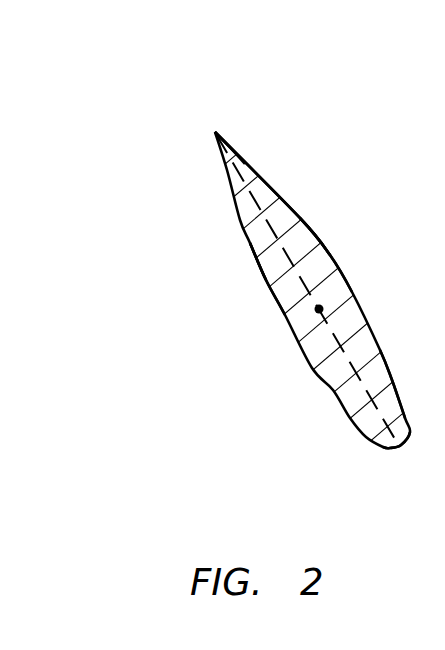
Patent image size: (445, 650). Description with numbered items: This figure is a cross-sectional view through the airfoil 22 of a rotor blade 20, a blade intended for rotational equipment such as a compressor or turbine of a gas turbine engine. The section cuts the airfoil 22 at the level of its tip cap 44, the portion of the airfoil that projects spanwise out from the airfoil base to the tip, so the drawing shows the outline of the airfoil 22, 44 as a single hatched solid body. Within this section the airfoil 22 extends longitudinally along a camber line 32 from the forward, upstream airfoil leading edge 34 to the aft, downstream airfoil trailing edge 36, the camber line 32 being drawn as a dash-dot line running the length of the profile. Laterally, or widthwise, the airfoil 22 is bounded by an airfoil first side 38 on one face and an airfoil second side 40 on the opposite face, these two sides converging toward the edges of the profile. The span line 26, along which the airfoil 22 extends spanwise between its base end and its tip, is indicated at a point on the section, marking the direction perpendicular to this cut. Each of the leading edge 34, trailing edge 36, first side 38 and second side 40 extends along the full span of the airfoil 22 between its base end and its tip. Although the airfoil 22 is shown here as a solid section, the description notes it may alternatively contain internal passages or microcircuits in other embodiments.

The rotor blade 20 is at (156, 97).
The airfoil 22 is at (250, 323).
The airfoil tip cap 44 is at (272, 193).
The span line 26 is at (323, 304).
The camber line 32 is at (360, 378).
The airfoil leading edge 34 is at (397, 447).
The airfoil trailing edge 36 is at (216, 130).
The airfoil first side 38 is at (332, 257).
The airfoil second side 40 is at (262, 270).